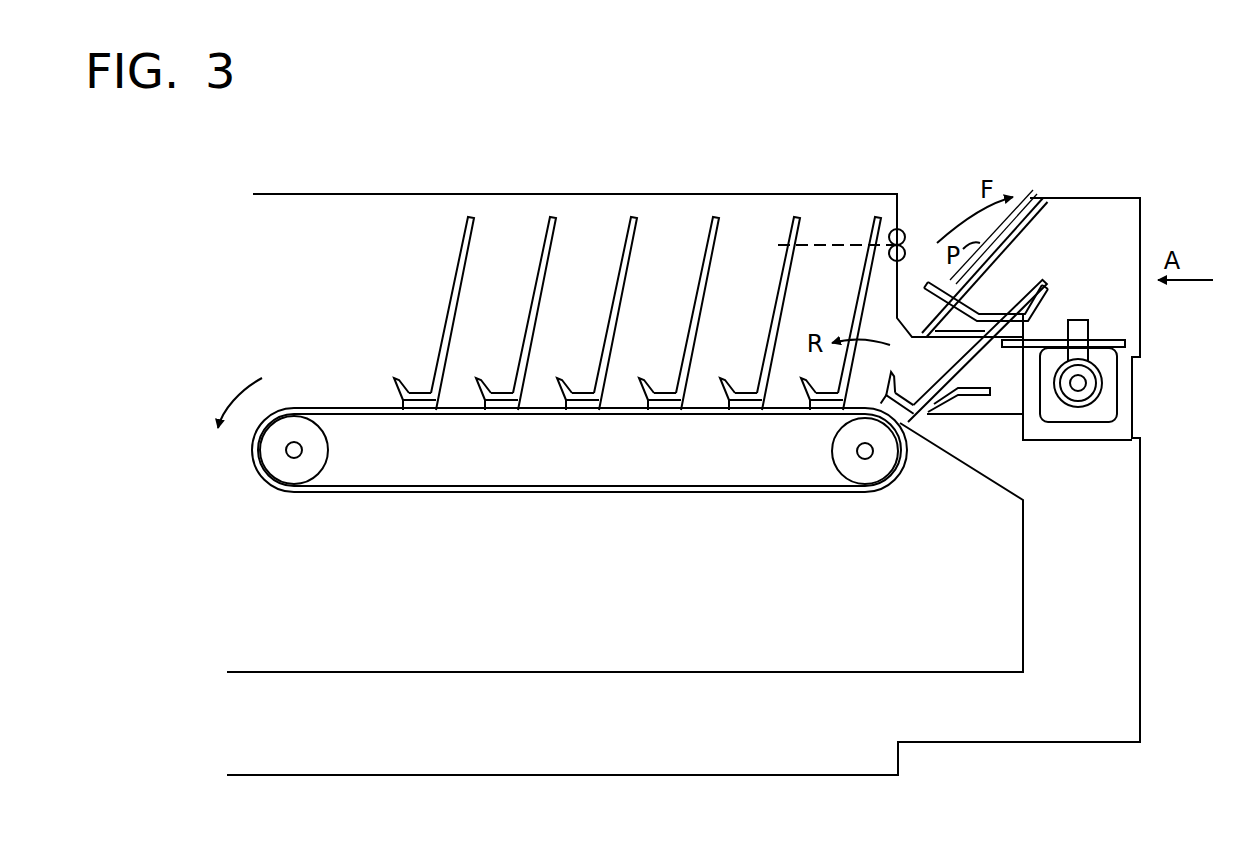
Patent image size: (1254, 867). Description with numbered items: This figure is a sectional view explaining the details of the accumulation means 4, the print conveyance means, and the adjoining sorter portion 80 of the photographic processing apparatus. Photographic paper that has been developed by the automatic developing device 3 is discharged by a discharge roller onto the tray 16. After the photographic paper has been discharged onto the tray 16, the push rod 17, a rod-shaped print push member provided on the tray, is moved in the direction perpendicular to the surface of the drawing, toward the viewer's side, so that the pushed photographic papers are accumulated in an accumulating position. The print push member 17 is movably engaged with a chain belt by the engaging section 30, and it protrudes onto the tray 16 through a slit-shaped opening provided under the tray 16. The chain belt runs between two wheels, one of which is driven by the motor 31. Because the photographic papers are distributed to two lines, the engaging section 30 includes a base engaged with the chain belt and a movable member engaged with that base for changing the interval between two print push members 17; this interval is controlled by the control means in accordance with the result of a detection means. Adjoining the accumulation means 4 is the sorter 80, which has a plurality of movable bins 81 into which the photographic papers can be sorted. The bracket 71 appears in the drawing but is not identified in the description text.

The automatic developing device 3 is at (437, 186).
The accumulation means 4 is at (1130, 187).
The tray 16 is at (1047, 218).
The push rod 17 is at (932, 310).
The engaging section 30 is at (1040, 310).
The motor 31 is at (1100, 413).
The stopper 71 is at (960, 365).
The sorter 80 is at (1010, 625).
The movable bins 81 is at (793, 233).